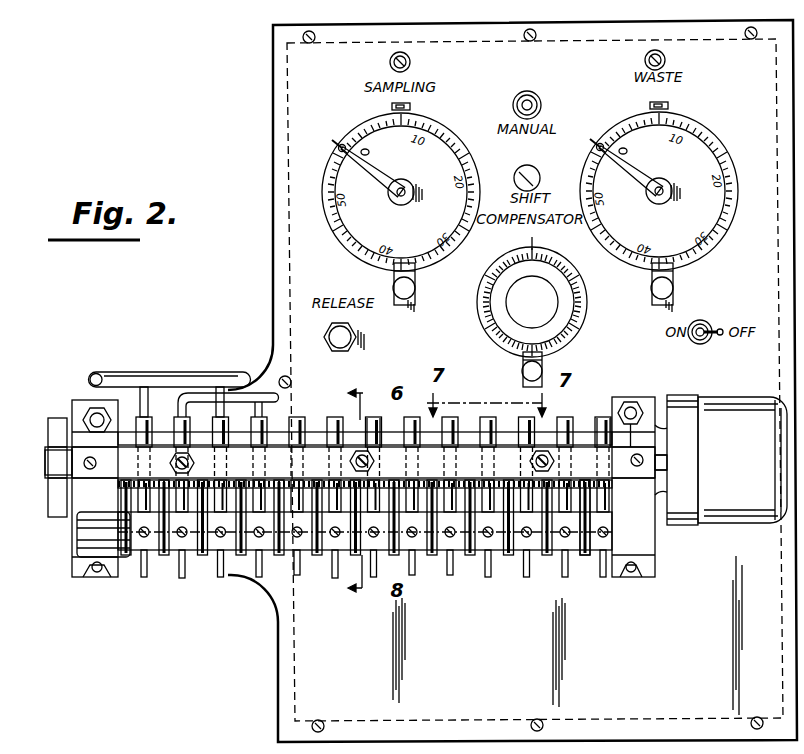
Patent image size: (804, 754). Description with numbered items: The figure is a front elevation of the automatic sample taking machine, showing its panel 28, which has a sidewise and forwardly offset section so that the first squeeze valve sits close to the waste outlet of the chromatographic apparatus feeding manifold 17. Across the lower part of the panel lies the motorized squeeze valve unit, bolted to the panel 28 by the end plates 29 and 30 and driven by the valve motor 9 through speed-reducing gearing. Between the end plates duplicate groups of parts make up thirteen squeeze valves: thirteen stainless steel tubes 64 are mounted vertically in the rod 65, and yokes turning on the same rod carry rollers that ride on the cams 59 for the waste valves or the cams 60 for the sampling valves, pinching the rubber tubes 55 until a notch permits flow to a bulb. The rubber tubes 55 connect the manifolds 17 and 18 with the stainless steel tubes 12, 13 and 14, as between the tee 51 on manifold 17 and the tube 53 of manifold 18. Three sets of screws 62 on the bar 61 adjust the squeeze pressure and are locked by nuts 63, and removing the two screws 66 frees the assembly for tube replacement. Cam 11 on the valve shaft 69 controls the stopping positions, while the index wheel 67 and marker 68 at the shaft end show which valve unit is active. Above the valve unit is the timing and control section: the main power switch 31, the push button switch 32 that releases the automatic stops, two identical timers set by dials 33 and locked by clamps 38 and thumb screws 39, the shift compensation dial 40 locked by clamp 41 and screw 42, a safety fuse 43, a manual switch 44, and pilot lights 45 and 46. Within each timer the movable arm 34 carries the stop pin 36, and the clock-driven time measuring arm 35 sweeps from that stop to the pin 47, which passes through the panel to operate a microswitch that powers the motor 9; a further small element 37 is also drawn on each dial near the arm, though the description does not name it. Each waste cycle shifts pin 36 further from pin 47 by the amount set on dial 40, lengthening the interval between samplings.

The valve motor 9 is at (735, 410).
The cam 11 is at (630, 404).
The stainless steel tube 12 is at (604, 578).
The S valve units 13 is at (147, 580).
The stainless steel tube 14 is at (183, 580).
The manifold 17 is at (226, 372).
The manifold 18 is at (224, 390).
The panel 28 is at (278, 655).
The end plate 29 is at (656, 570).
The end plate 30 is at (72, 578).
The main power switch 31 is at (706, 343).
The push button switch 32 is at (354, 344).
The dial 33 is at (341, 249).
The movable arm 34 is at (375, 180).
The time measuring arm 35 is at (343, 137).
The pin 36 is at (339, 146).
The pin 37 is at (369, 153).
The clamp 38 is at (415, 276).
The thumb screw 39 is at (415, 295).
The dial 40 is at (578, 331).
The clamp 41 is at (522, 362).
The screw 42 is at (523, 374).
The safety fuse 43 is at (516, 174).
The manual switch 44 is at (538, 106).
The pilot light 45 is at (410, 64).
The pilot light 46 is at (665, 62).
The pin 47 is at (410, 104).
The tee 51 is at (142, 372).
The tube 53 is at (181, 407).
The rubber tube 55 is at (296, 436).
The cam 59 is at (374, 416).
The cam 60 is at (337, 415).
The bar 61 is at (315, 448).
The screw 62 is at (176, 468).
The nut 63 is at (188, 466).
The stainless steel tube 64 is at (588, 560).
The rod 65 is at (565, 578).
The screw 66 is at (90, 470).
The index wheel 67 is at (50, 418).
The marker 68 is at (45, 463).
The valve shaft 69 is at (662, 452).